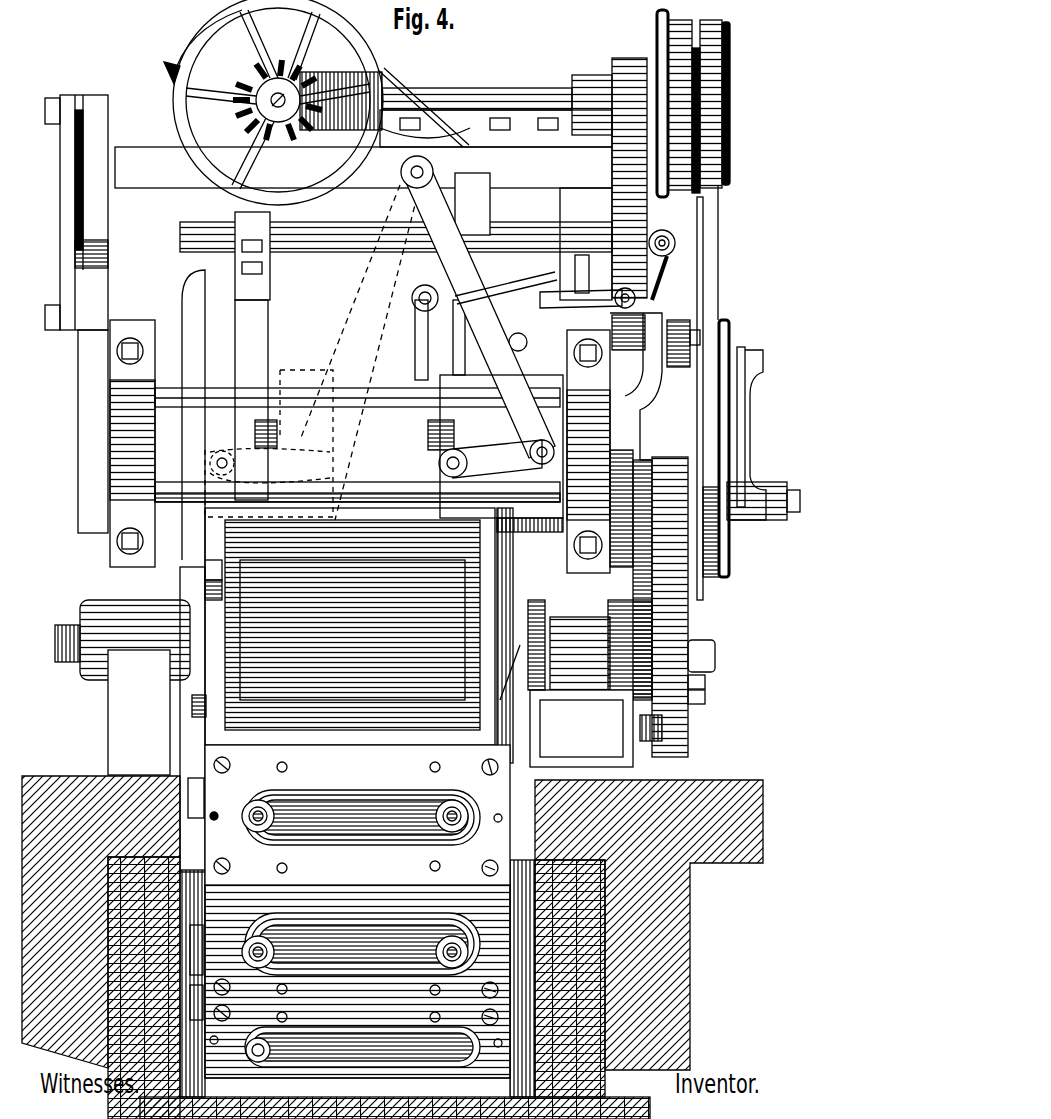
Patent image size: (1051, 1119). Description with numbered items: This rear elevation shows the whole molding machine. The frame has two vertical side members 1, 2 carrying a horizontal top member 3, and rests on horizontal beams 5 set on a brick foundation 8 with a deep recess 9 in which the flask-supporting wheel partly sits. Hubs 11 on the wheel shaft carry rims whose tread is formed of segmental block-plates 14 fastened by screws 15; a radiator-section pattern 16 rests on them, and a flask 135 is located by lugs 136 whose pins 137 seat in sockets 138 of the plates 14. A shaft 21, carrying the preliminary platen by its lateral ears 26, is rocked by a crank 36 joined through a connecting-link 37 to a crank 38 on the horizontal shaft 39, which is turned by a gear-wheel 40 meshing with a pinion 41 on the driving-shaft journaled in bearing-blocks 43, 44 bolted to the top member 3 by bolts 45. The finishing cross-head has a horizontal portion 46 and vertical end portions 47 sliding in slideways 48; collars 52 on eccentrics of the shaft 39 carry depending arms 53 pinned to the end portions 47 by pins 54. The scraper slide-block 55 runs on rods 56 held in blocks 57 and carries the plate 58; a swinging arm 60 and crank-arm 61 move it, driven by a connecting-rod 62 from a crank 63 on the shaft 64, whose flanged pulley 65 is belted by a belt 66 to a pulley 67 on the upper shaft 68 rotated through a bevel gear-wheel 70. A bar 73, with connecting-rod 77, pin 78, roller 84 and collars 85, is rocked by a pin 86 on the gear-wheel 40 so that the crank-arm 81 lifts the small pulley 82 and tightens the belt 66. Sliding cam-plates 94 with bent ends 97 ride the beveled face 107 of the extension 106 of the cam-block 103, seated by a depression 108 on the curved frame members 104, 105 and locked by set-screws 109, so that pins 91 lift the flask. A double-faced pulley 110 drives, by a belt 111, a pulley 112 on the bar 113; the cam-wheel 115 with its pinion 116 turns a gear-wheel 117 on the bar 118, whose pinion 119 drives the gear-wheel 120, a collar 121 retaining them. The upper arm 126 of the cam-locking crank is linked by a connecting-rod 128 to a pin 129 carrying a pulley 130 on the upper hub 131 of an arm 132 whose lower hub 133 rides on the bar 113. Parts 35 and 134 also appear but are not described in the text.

The vertical side member 1 is at (548, 214).
The vertical side member 2 is at (118, 728).
The horizontal top member 3 is at (150, 166).
The horizontal beams 5 is at (155, 795).
The foundation 8 is at (600, 928).
The depression or recess 9 is at (520, 855).
The hubs 11 is at (246, 812).
The segmental block-plates 14 is at (357, 911).
The screws 15 is at (356, 883).
The pattern 16 is at (312, 842).
The shaft 21 is at (76, 508).
The lateral ears 26 is at (243, 488).
The clip 35 is at (201, 577).
The crank 36 is at (92, 431).
The connecting-link 37 is at (64, 260).
The crank 38 is at (88, 190).
The horizontally-extending shaft 39 is at (318, 254).
The gear-wheel 40 is at (668, 210).
The pinion 41 is at (612, 66).
The bearing-block 43 is at (578, 92).
The bearing-block 44 is at (400, 72).
The bolts 45 is at (410, 118).
The horizontal portion of cross-head 46 is at (462, 90).
The vertical end portions of cross-head 47 is at (313, 415).
The slideways 48 is at (186, 300).
The collars 52 is at (240, 212).
The depending arms 53 is at (360, 400).
The pins 54 is at (290, 440).
The slide-block 55 is at (501, 446).
The horizontally-extending rods 56 is at (392, 388).
The blocks 57 is at (360, 446).
The plate 58 is at (530, 508).
The swinging arm 60 is at (478, 310).
The crank-arm 61 is at (490, 459).
The connecting-rod 62 is at (609, 296).
The crank 63 is at (596, 290).
The horizontal shaft 64 is at (560, 292).
The flanged pulley 65 is at (580, 256).
The belt 66 is at (496, 127).
The pulley 67 is at (273, 102).
The upper transverse shaft 68 is at (262, 106).
The bevel gear-wheel 70 is at (248, 80).
The bar 73 is at (676, 296).
The connecting-rod 77 is at (340, 72).
The long pin 78 is at (676, 248).
The crank-arm 81 is at (506, 285).
The small flanged pulley 82 is at (414, 288).
The roller 84 is at (676, 238).
The collars 85 is at (675, 276).
The pin 86 is at (612, 170).
The pins 91 is at (288, 766).
The sliding cam-plates 94 is at (192, 704).
The bent ends 97 is at (200, 775).
The cam-block 103 is at (90, 610).
The curved frame member 104 is at (580, 640).
The curved frame member 105 is at (139, 712).
The extension 106 is at (230, 660).
The curved or beveled face 107 is at (182, 600).
The depression 108 is at (581, 728).
The set-screws 109 is at (58, 636).
The double-faced pulley 110 is at (726, 56).
The belt 111 is at (704, 300).
The pulley 112 is at (730, 540).
The horizontal shaft or bar 113 is at (794, 490).
The cam-wheel 115 is at (640, 470).
The pinion 116 is at (706, 598).
The gear-wheel 117 is at (700, 688).
The lower horizontal shaft or bar 118 is at (716, 652).
The pinion 119 is at (628, 606).
The gear-wheel 120 is at (660, 780).
The collar 121 is at (720, 671).
The upper arm 126 is at (730, 326).
The connecting-rod 128 is at (649, 440).
The pin 129 is at (750, 364).
The pulley 130 is at (745, 346).
The upper hub 131 is at (752, 392).
The upwardly-extending arm 132 is at (745, 426).
The hub 133 is at (734, 520).
The flange 134 is at (720, 180).
The flask 135 is at (420, 530).
The lugs 136 is at (508, 575).
The pins 137 is at (515, 590).
The sockets or depressions 138 is at (216, 820).